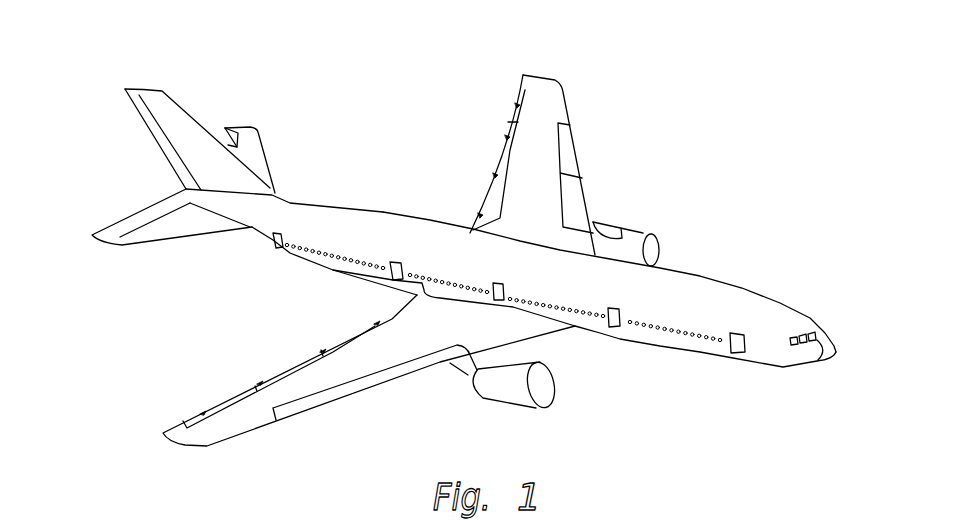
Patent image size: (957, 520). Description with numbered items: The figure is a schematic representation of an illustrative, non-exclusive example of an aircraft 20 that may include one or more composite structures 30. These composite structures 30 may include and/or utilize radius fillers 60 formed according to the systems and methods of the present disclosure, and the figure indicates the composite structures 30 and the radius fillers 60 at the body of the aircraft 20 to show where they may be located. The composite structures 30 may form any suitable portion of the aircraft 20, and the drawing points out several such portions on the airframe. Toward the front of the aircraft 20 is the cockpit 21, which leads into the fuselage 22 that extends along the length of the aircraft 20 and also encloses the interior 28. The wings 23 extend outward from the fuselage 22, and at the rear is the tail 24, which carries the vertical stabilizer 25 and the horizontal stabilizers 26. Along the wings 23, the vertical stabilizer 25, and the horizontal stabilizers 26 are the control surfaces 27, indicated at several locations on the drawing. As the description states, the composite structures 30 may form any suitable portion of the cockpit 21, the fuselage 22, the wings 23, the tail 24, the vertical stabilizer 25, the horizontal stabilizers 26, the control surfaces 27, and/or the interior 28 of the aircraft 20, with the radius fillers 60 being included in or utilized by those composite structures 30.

The aircraft 20 is at (155, 40).
The cockpit 21 is at (800, 325).
The fuselage 22 is at (740, 287).
The wings 23 is at (545, 228).
The tail 24 is at (118, 137).
The vertical stabilizer 25 is at (158, 103).
The horizontal stabilizers 26 is at (253, 153).
The control surfaces 27 is at (222, 137).
The interior 28 is at (693, 323).
The composite structures 30 is at (391, 230).
The radius fillers 60 is at (335, 209).